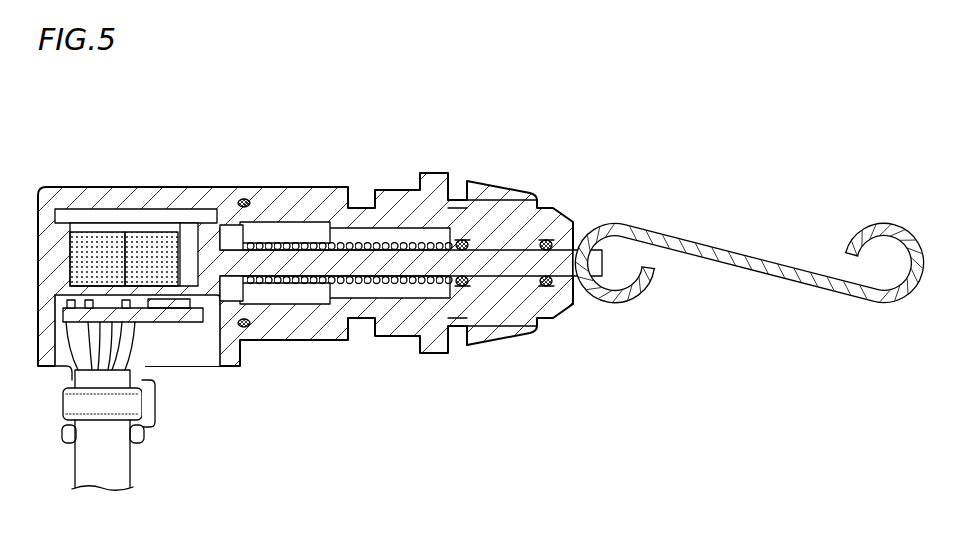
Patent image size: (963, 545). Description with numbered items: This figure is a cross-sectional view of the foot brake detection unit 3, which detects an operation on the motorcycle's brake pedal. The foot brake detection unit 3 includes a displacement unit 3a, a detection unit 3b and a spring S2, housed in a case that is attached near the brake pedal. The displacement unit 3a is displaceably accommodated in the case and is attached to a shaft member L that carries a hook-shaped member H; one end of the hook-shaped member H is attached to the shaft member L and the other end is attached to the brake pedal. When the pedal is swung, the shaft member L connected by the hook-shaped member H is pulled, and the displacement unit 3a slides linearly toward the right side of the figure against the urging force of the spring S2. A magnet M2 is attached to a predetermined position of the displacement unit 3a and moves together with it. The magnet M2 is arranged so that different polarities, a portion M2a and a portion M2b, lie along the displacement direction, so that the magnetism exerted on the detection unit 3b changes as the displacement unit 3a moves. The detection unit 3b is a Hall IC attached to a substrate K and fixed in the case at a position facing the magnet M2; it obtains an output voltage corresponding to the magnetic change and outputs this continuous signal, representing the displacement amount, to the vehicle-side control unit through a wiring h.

The foot brake detection unit 3 is at (305, 260).
The displacement unit 3a is at (90, 224).
The detection unit 3b is at (176, 309).
The magnet M2 is at (124, 220).
The portion of the magnet M2a is at (97, 259).
The portion of the magnet M2b is at (148, 230).
The spring S2 is at (386, 242).
The shaft member L is at (507, 250).
The hook-shaped member H is at (648, 226).
The substrate K is at (193, 323).
The wiring h is at (128, 471).